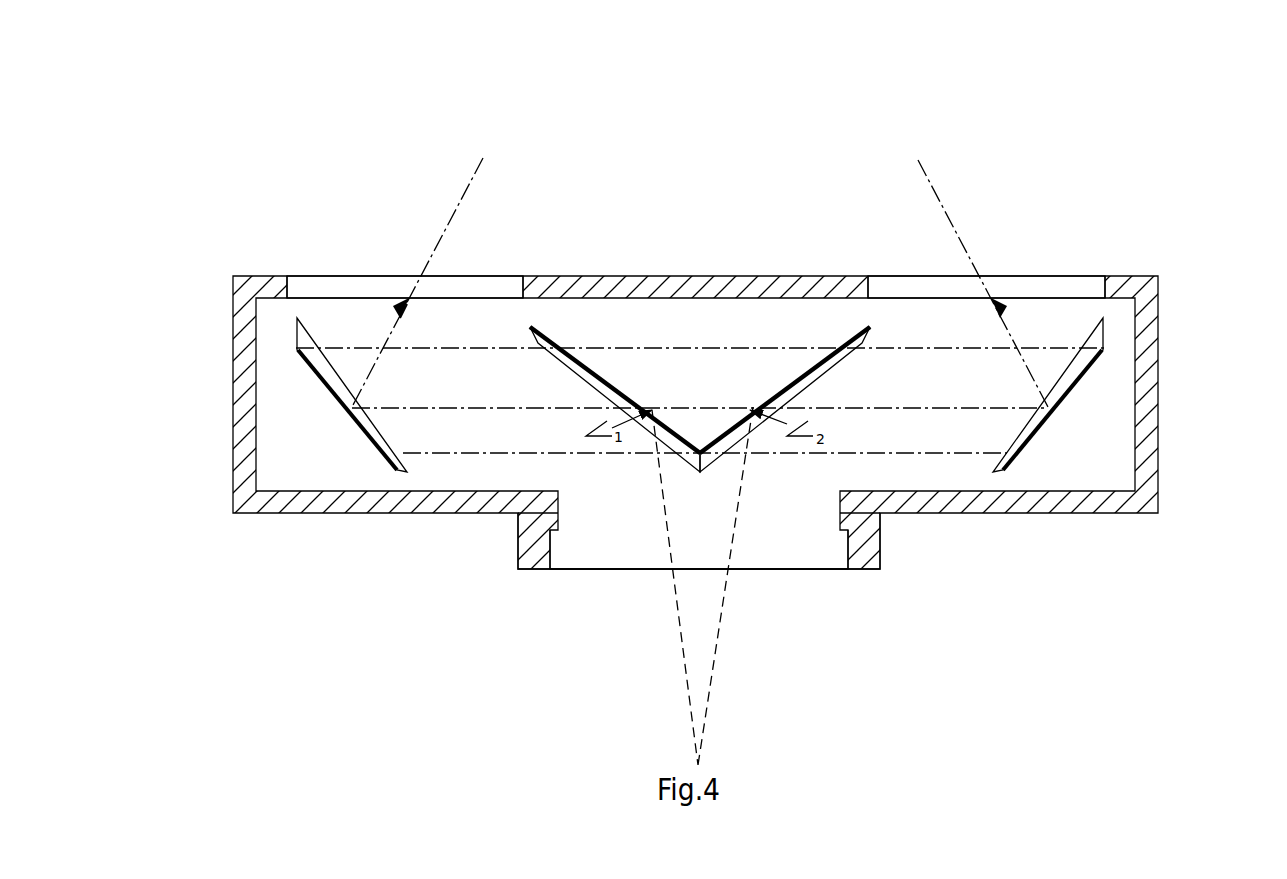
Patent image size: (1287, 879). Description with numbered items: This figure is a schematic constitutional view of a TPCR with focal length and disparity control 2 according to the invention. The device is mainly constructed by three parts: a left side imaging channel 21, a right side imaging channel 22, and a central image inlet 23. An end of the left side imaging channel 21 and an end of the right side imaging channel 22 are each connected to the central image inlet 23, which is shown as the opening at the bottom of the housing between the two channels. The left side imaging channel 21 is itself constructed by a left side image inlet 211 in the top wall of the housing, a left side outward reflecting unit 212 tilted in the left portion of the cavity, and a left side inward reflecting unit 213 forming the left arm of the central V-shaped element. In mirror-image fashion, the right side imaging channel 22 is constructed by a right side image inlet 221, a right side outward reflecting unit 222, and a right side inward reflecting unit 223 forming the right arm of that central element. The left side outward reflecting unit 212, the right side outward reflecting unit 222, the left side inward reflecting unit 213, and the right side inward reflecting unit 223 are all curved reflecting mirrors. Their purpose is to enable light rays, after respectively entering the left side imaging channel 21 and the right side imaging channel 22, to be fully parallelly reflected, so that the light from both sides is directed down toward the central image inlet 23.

The TPCR with focal length and disparity control 2 is at (1194, 298).
The left side imaging channel 21 is at (428, 267).
The right side imaging channel 22 is at (974, 267).
The central image inlet 23 is at (585, 513).
The left side image inlet 211 is at (355, 290).
The left side outward reflecting unit 212 is at (297, 318).
The left side inward reflecting unit 213 is at (577, 360).
The right side image inlet 221 is at (1037, 290).
The right side outward reflecting unit 222 is at (1060, 378).
The right side inward reflecting unit 223 is at (783, 388).